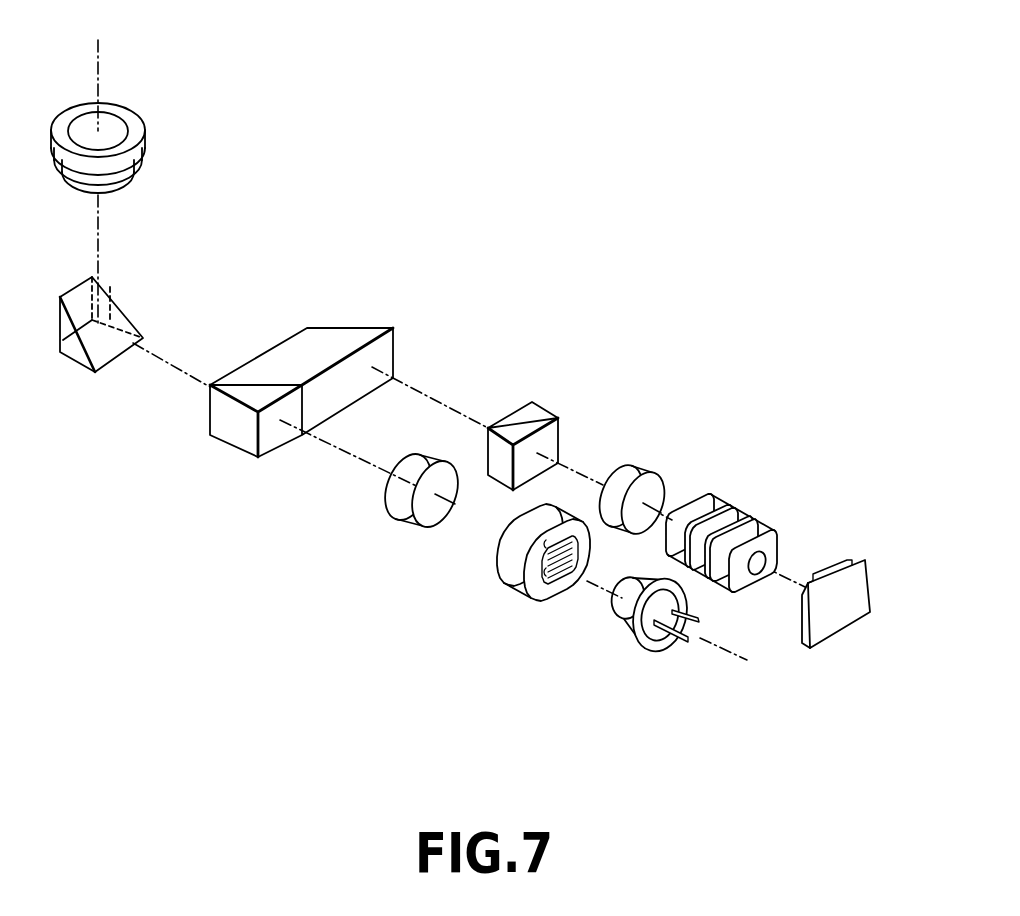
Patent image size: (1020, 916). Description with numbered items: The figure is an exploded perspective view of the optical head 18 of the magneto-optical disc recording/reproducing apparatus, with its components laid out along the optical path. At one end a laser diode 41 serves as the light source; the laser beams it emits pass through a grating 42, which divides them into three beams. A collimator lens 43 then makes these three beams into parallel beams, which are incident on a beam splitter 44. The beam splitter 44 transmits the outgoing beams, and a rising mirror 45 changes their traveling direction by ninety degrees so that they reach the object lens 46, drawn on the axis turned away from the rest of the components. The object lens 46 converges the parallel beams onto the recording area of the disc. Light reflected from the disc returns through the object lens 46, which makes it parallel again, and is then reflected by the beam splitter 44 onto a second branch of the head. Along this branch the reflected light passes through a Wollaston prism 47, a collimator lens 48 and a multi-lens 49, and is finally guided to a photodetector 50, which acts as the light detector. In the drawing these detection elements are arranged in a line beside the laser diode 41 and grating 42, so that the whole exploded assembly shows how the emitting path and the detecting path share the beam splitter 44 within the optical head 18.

The optical head 18 is at (460, 142).
The laser diode 41 is at (633, 645).
The grating 42 is at (508, 590).
The collimator lens 43 is at (397, 520).
The beam splitter 44 is at (345, 328).
The rising mirror 45 is at (85, 362).
The object lens 46 is at (148, 150).
The Wollaston prism 47 is at (551, 412).
The collimator lens 48 is at (653, 478).
The multi-lens 49 is at (762, 527).
The photodetector 50 is at (860, 622).